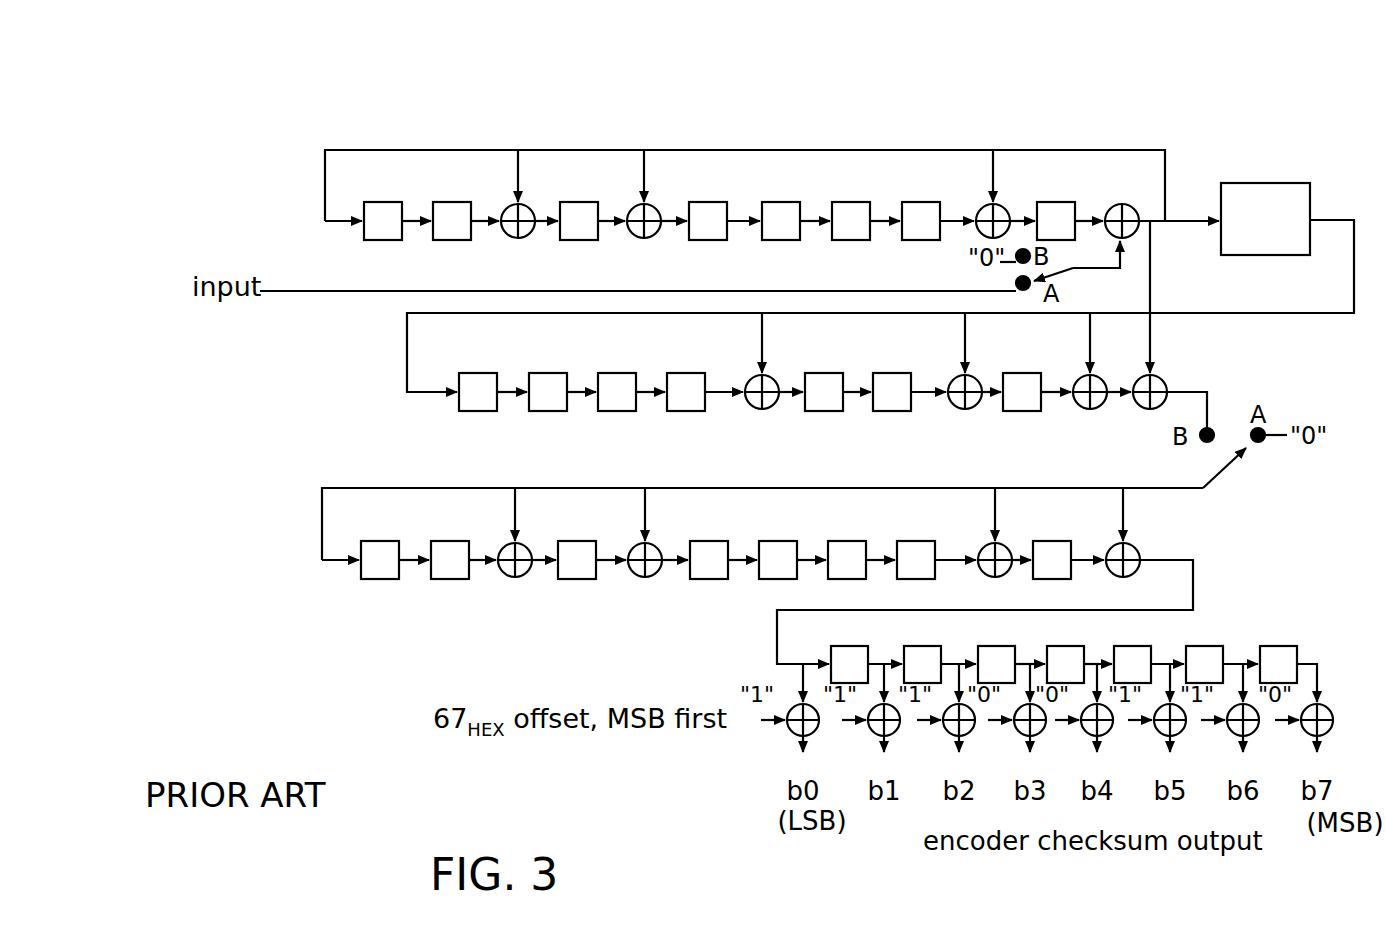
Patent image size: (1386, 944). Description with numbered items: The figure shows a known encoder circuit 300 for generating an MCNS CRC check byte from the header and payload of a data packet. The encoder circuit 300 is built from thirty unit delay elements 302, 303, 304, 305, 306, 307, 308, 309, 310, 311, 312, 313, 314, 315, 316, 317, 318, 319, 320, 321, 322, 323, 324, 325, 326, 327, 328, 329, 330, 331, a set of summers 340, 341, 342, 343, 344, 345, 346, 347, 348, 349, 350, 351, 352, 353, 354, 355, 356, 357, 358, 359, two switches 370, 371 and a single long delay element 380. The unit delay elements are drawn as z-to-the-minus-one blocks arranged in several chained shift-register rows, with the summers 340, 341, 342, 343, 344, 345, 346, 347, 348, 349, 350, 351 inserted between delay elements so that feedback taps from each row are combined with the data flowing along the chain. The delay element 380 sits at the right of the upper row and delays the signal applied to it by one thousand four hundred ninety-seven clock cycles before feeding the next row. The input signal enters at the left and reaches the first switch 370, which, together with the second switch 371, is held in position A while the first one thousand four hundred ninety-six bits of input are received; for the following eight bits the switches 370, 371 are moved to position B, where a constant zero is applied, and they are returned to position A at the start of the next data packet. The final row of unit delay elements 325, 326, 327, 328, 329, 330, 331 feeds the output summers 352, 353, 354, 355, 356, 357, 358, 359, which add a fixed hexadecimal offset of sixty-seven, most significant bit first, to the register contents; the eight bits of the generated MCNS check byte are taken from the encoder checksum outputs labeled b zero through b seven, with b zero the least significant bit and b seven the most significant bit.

The encoder circuit 300 is at (800, 86).
The unit delay element 302 is at (385, 241).
The unit delay element 303 is at (465, 202).
The unit delay element 304 is at (597, 202).
The unit delay element 305 is at (703, 202).
The unit delay element 306 is at (781, 241).
The unit delay element 307 is at (866, 202).
The unit delay element 308 is at (905, 202).
The unit delay element 309 is at (1050, 202).
The unit delay element 310 is at (495, 373).
The unit delay element 311 is at (555, 411).
The unit delay element 312 is at (632, 373).
The unit delay element 313 is at (698, 411).
The unit delay element 314 is at (840, 373).
The unit delay element 315 is at (878, 373).
The unit delay element 316 is at (1008, 373).
The unit delay element 317 is at (398, 541).
The unit delay element 318 is at (433, 541).
The unit delay element 319 is at (568, 541).
The unit delay element 320 is at (726, 541).
The unit delay element 321 is at (779, 580).
The unit delay element 322 is at (862, 541).
The unit delay element 323 is at (900, 541).
The unit delay element 324 is at (1043, 541).
The unit delay element 325 is at (862, 646).
The unit delay element 326 is at (905, 646).
The unit delay element 327 is at (982, 646).
The unit delay element 328 is at (1052, 646).
The unit delay element 329 is at (1122, 646).
The unit delay element 330 is at (1195, 646).
The unit delay element 331 is at (1270, 646).
The summer 340 is at (518, 240).
The summer 341 is at (644, 240).
The summer 342 is at (980, 235).
The summer 343 is at (1112, 208).
The summer 344 is at (758, 409).
The summer 345 is at (961, 409).
The summer 346 is at (1086, 409).
The summer 347 is at (1162, 380).
The summer 348 is at (510, 578).
The summer 349 is at (641, 578).
The summer 350 is at (1005, 575).
The summer 351 is at (1133, 545).
The summer 352 is at (793, 735).
The summer 353 is at (871, 736).
The summer 354 is at (946, 736).
The summer 355 is at (1017, 736).
The summer 356 is at (1084, 736).
The summer 357 is at (1157, 736).
The summer 358 is at (1230, 736).
The summer 359 is at (1304, 736).
The switch 370 is at (1078, 269).
The switch 371 is at (1218, 478).
The delay element 380 is at (1275, 183).